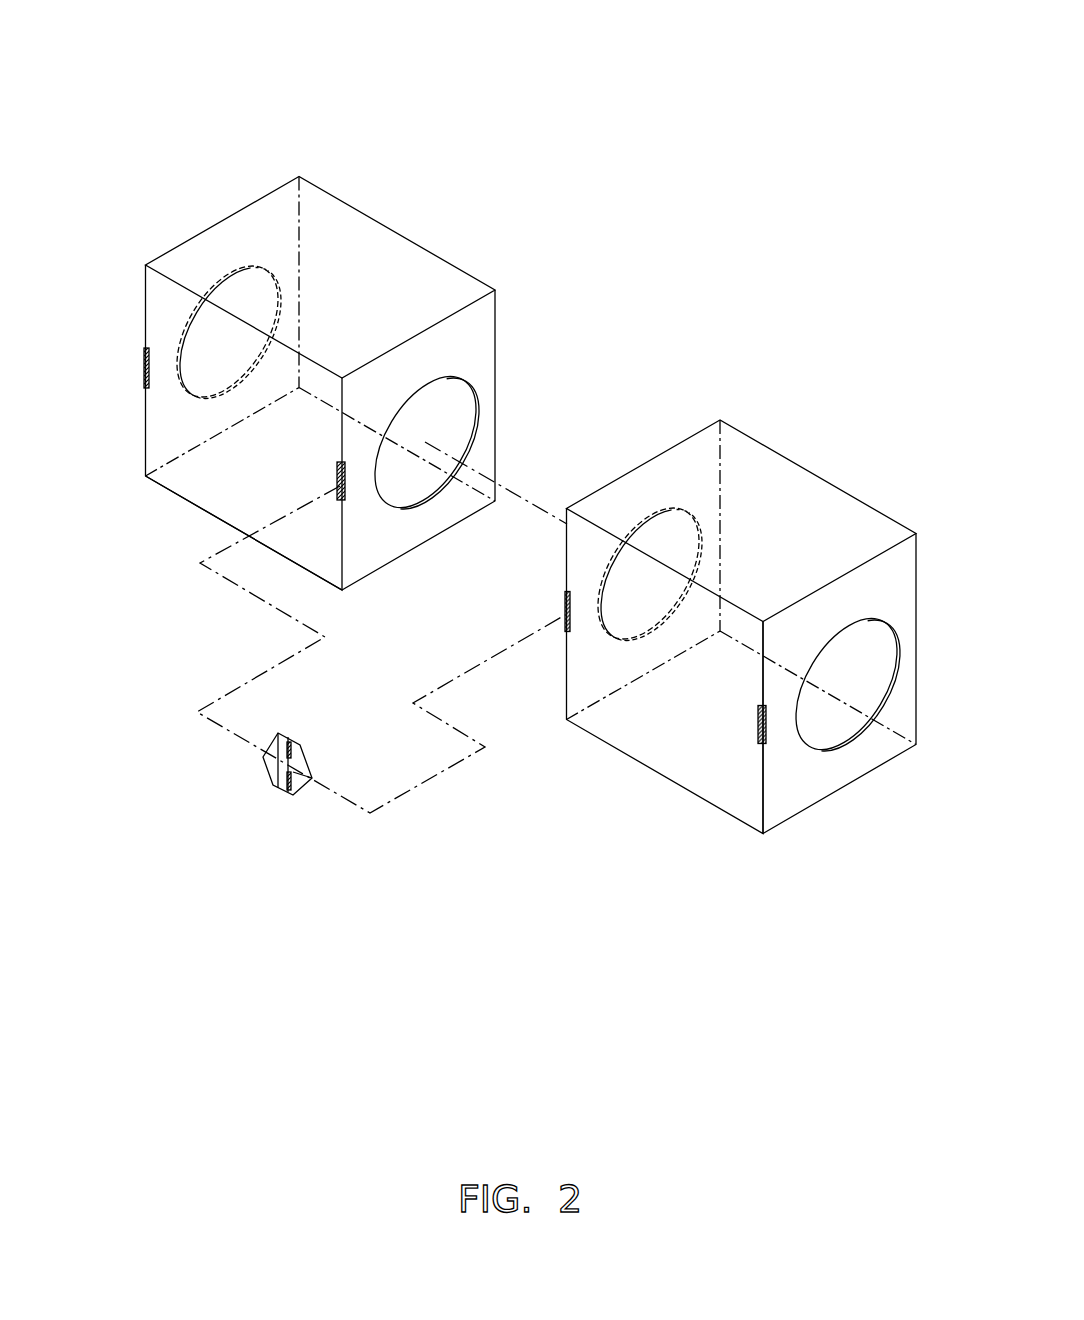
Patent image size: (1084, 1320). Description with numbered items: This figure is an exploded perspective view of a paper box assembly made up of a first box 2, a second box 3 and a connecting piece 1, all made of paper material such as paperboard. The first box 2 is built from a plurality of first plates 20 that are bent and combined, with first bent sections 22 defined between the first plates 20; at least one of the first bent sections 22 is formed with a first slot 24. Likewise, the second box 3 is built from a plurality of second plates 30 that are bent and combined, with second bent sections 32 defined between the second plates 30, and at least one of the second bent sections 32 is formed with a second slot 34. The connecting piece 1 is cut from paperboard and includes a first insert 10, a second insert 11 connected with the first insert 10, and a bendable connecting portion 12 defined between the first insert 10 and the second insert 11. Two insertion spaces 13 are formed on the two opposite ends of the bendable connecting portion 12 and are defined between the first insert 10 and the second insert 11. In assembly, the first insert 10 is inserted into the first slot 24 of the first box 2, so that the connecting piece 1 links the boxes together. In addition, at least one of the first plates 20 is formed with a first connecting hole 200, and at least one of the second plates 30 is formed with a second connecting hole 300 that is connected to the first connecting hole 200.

The connecting piece 1 is at (300, 933).
The first box 2 is at (436, 157).
The second box 3 is at (767, 343).
The first insert 10 is at (273, 757).
The second insert 11 is at (295, 773).
The bendable connecting portion 12 is at (288, 773).
The insertion spaces 13 is at (298, 755).
The first plates 20 is at (473, 327).
The first bent sections 22 is at (330, 550).
The first slot 24 is at (147, 377).
The second plates 30 is at (690, 770).
The second bent sections 32 is at (768, 663).
The second slot 34 is at (567, 620).
The first connecting hole 200 is at (457, 408).
The second connecting hole 300 is at (835, 722).